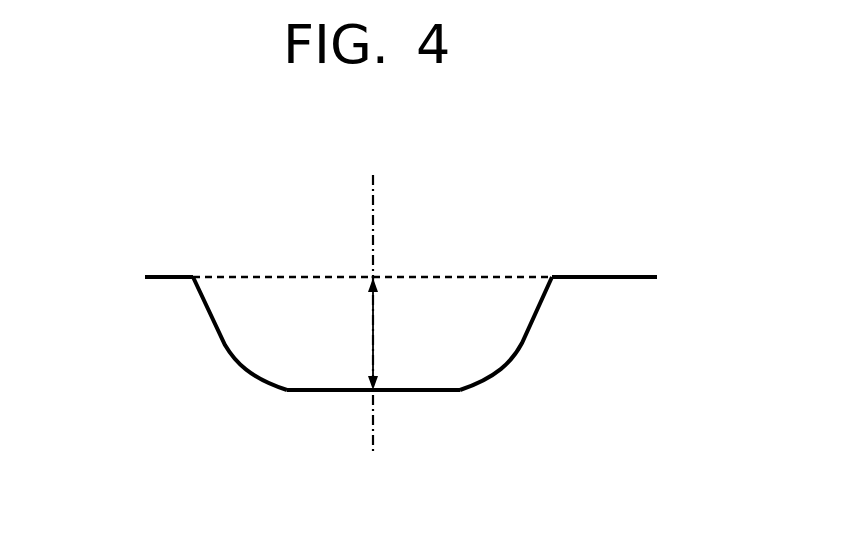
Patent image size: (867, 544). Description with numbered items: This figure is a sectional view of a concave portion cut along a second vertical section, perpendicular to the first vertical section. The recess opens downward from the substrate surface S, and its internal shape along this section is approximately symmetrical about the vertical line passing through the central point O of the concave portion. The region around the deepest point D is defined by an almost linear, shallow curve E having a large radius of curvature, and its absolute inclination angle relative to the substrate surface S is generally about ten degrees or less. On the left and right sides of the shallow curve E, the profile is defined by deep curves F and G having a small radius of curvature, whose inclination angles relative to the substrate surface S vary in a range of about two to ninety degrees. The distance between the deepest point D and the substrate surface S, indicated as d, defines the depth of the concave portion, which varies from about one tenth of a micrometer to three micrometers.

The substrate surface S is at (613, 277).
The deep curve F is at (215, 336).
The deep curve G is at (532, 336).
The shallow curve E is at (418, 393).
The central point O is at (373, 277).
The deepest point D is at (372, 393).
The depth of recess d is at (384, 334).